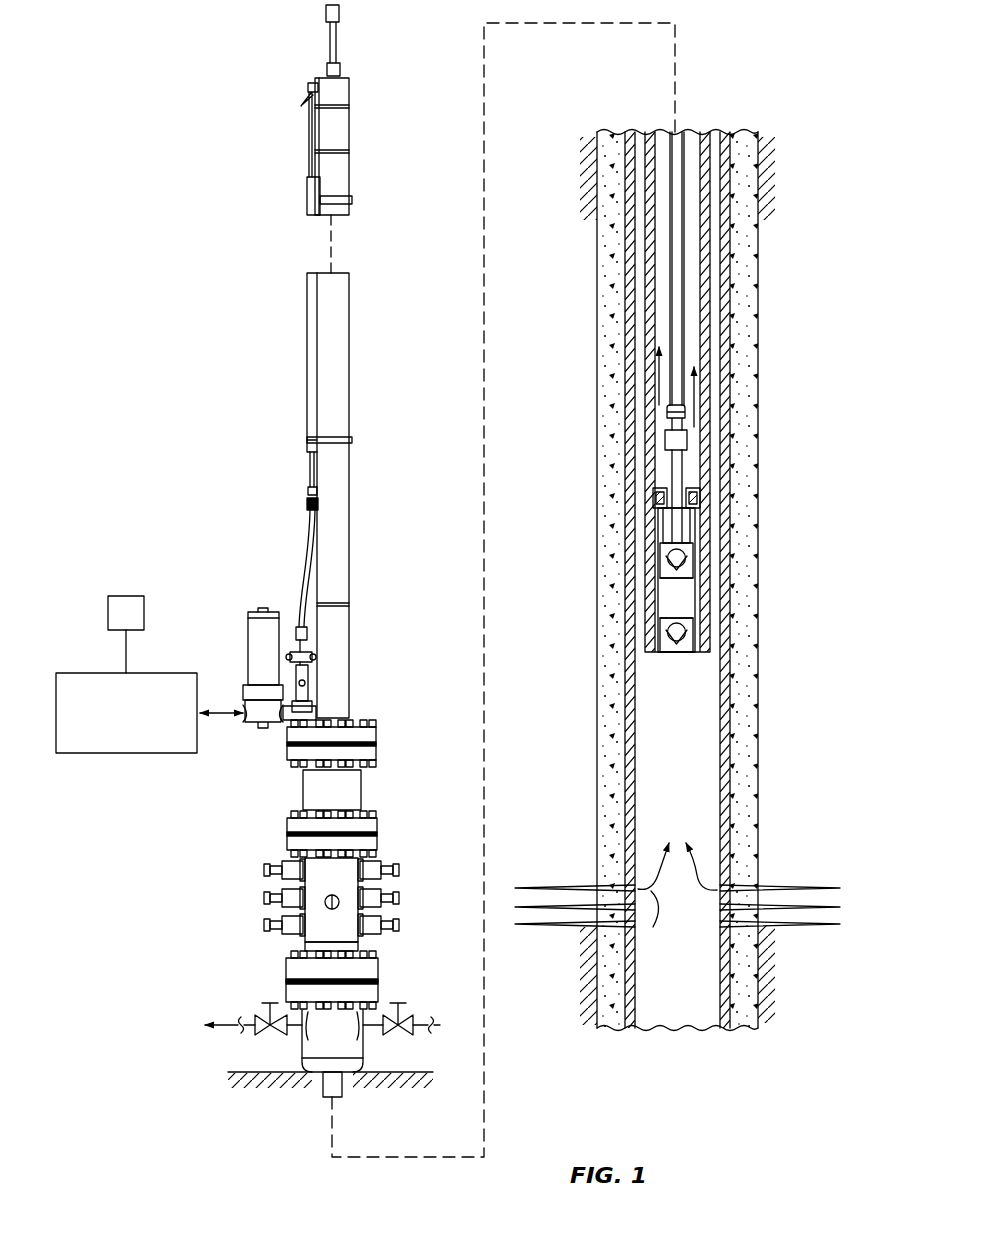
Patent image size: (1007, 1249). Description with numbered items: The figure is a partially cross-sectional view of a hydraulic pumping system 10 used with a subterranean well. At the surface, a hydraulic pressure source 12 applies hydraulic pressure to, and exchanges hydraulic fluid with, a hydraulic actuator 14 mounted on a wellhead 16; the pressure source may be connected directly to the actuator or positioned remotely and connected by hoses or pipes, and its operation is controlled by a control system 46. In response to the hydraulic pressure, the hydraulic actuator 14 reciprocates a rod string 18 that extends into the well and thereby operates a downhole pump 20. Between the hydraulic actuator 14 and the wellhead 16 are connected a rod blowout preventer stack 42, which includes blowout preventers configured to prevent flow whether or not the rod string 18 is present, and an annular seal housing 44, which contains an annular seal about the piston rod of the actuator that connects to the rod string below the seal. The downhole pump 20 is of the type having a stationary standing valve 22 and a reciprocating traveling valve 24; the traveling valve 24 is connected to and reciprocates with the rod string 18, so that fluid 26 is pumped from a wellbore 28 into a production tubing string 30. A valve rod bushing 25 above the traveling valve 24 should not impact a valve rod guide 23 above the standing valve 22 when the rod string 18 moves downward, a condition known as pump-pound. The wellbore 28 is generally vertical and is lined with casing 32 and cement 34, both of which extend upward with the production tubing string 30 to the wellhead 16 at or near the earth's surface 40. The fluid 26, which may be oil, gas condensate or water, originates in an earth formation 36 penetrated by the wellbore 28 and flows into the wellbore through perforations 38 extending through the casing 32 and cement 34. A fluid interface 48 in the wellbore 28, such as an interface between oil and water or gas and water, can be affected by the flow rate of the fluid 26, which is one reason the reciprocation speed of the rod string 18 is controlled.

The hydraulic pumping system 10 is at (150, 73).
The hydraulic pressure source 12 is at (118, 758).
The hydraulic actuator 14 is at (357, 316).
The wellhead 16 is at (383, 978).
The rod string 18 is at (664, 297).
The downhole pump 20 is at (637, 597).
The standing valve 22 is at (667, 655).
The valve rod guide 23 is at (660, 492).
The traveling valve 24 is at (688, 580).
The valve rod bushing 25 is at (667, 447).
The fluid 26 is at (224, 1022).
The wellbore 28 is at (642, 830).
The production tubing string 30 is at (320, 1096).
The casing 32 is at (300, 1074).
The cement 34 is at (604, 790).
The earth formation 36 is at (793, 872).
The perforations 38 is at (556, 886).
The earth's surface 40 is at (393, 1072).
The rod blowout preventer stack 42 is at (267, 893).
The annular seal housing 44 is at (295, 778).
The control system 46 is at (112, 596).
The fluid interface 48 is at (638, 272).